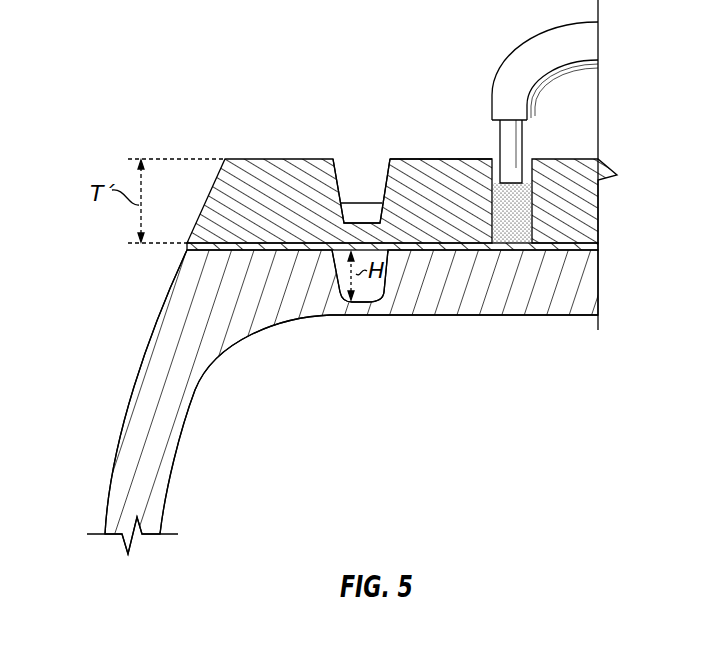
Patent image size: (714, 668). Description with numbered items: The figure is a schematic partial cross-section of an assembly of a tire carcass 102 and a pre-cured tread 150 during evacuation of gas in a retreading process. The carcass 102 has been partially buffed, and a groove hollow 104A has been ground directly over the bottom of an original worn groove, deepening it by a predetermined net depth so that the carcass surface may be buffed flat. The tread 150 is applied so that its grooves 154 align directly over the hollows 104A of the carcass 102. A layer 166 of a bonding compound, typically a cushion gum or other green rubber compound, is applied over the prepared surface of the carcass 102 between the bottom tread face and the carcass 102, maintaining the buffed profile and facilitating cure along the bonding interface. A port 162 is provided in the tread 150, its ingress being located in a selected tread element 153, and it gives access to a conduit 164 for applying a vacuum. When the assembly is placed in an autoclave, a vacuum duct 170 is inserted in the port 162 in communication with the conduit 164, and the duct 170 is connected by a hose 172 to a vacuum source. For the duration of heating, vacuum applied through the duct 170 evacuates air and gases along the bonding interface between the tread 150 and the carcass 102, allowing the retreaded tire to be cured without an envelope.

The tire carcass 102 is at (138, 368).
The groove hollow 104A is at (360, 303).
The tread 150 is at (280, 159).
The tread element 153 is at (548, 158).
The grooves 154 is at (361, 191).
The port 162 is at (495, 159).
The conduit 164 is at (509, 228).
The layer of bonding compound 166 is at (187, 247).
The vacuum duct 170 is at (500, 130).
The hose 172 is at (512, 57).